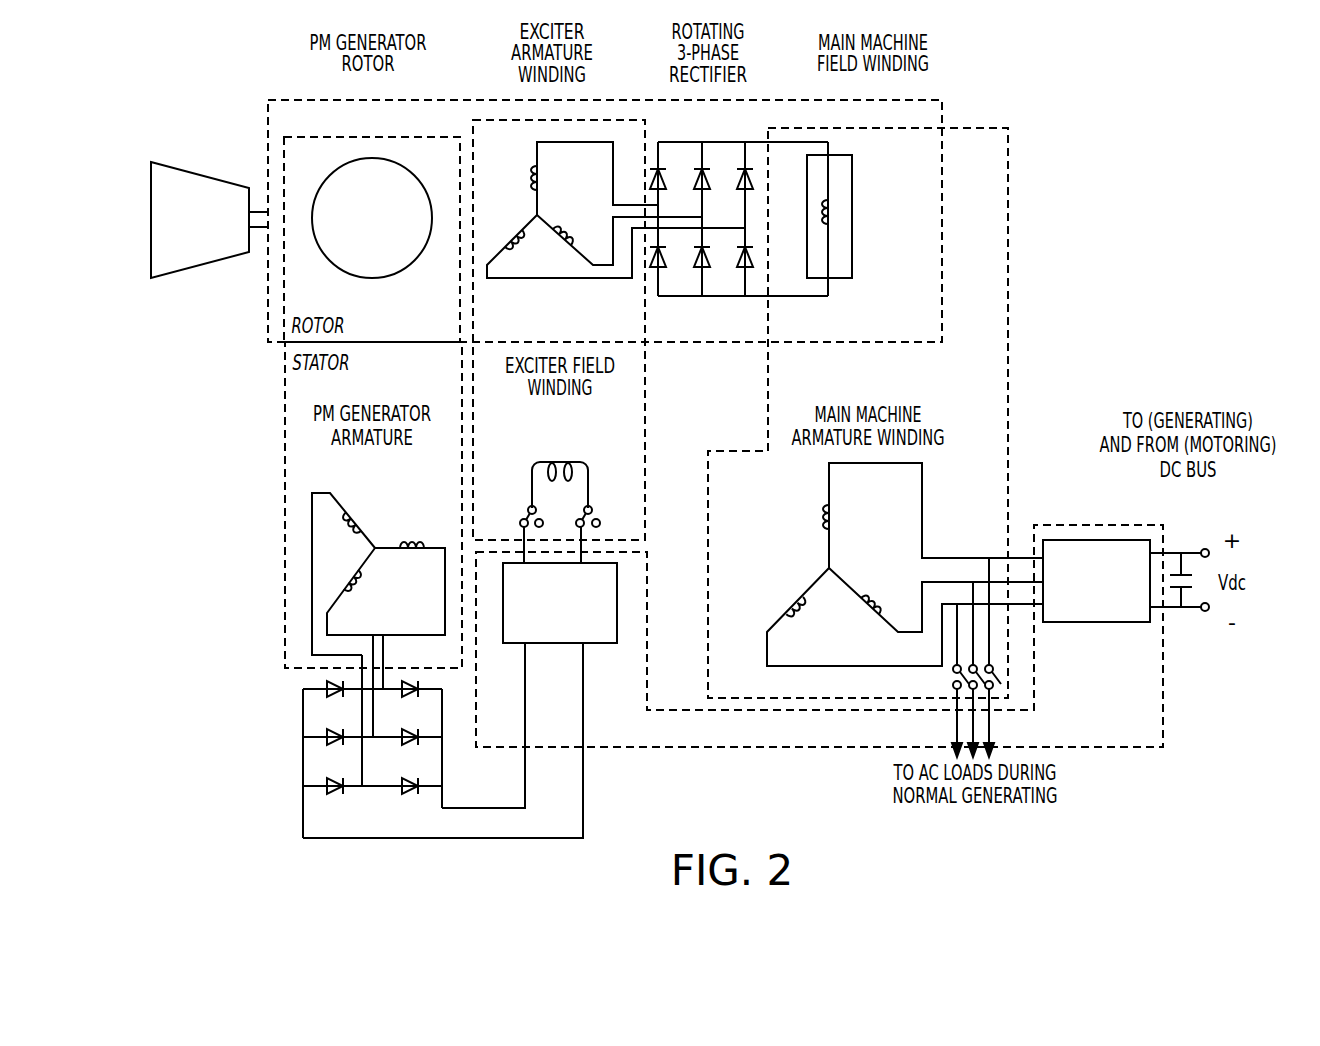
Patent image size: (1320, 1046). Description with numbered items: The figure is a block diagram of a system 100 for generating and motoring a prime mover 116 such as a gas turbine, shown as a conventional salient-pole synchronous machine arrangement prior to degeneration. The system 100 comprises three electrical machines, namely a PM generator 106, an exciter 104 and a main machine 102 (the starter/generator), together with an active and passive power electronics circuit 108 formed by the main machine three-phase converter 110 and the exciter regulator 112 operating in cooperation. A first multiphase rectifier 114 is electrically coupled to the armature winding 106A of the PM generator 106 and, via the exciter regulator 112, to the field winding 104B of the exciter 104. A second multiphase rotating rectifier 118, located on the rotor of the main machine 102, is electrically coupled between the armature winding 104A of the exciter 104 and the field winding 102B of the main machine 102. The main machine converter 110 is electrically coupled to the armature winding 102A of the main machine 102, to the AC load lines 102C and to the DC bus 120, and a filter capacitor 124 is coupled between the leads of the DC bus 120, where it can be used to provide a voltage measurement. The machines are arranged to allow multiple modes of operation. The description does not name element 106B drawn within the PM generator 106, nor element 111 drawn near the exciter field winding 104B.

The system 100 is at (1102, 203).
The main machine 102 is at (1021, 386).
The armature winding of the main machine 102A is at (806, 553).
The field winding of the main machine 102B is at (836, 238).
The AC load lines 102C is at (945, 677).
The exciter 104 is at (657, 368).
The armature winding of the exciter 104A is at (522, 204).
The field winding of the exciter 104B is at (560, 452).
The PM generator 106 is at (268, 420).
The armature winding of the PM generator 106A is at (380, 541).
The PM generator rotor magnet 106B is at (354, 231).
The active and passive power electronics circuit 108 is at (754, 759).
The main machine converter 110 is at (1097, 636).
The switch contacts 111 is at (518, 512).
The exciter regulator 112 is at (600, 652).
The multiphase rectifier 114 is at (287, 762).
The prime mover 116 is at (200, 172).
The multiphase rotating rectifier 118 is at (712, 134).
The DC bus 120 is at (1172, 628).
The filter capacitor 124 is at (1183, 545).